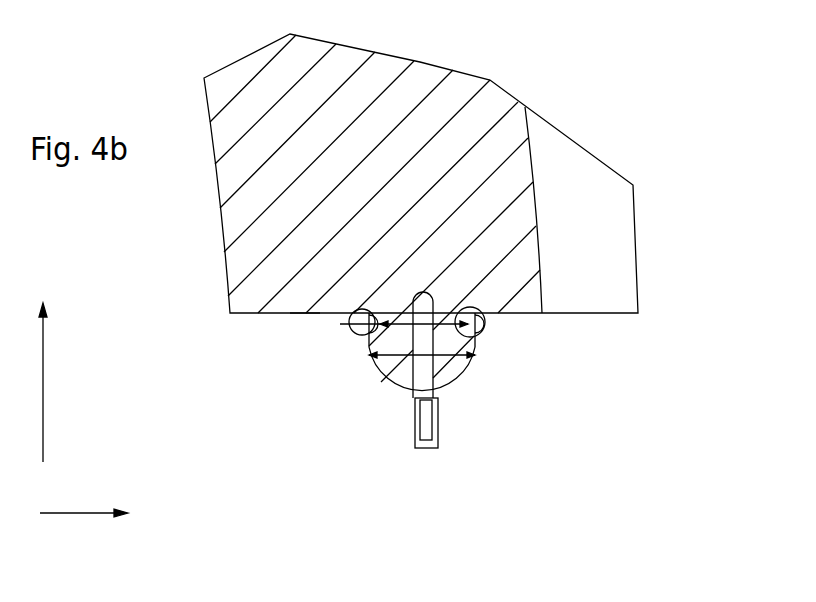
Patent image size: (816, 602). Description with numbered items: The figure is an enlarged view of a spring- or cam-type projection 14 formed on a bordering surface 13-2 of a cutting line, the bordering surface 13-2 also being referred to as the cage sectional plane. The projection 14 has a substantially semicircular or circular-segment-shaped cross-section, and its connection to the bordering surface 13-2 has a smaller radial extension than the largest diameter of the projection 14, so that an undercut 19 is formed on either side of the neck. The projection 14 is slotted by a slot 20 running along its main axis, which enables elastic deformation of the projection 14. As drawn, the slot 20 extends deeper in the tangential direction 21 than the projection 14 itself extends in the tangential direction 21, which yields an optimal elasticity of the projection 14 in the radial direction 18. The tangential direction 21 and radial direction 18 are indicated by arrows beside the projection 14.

The bordering surface 13-2 is at (305, 313).
The projection 14 is at (475, 365).
The radial direction 18 is at (82, 513).
The undercut 19 is at (349, 332).
The slot 20 is at (418, 402).
The tangential direction 21 is at (43, 388).